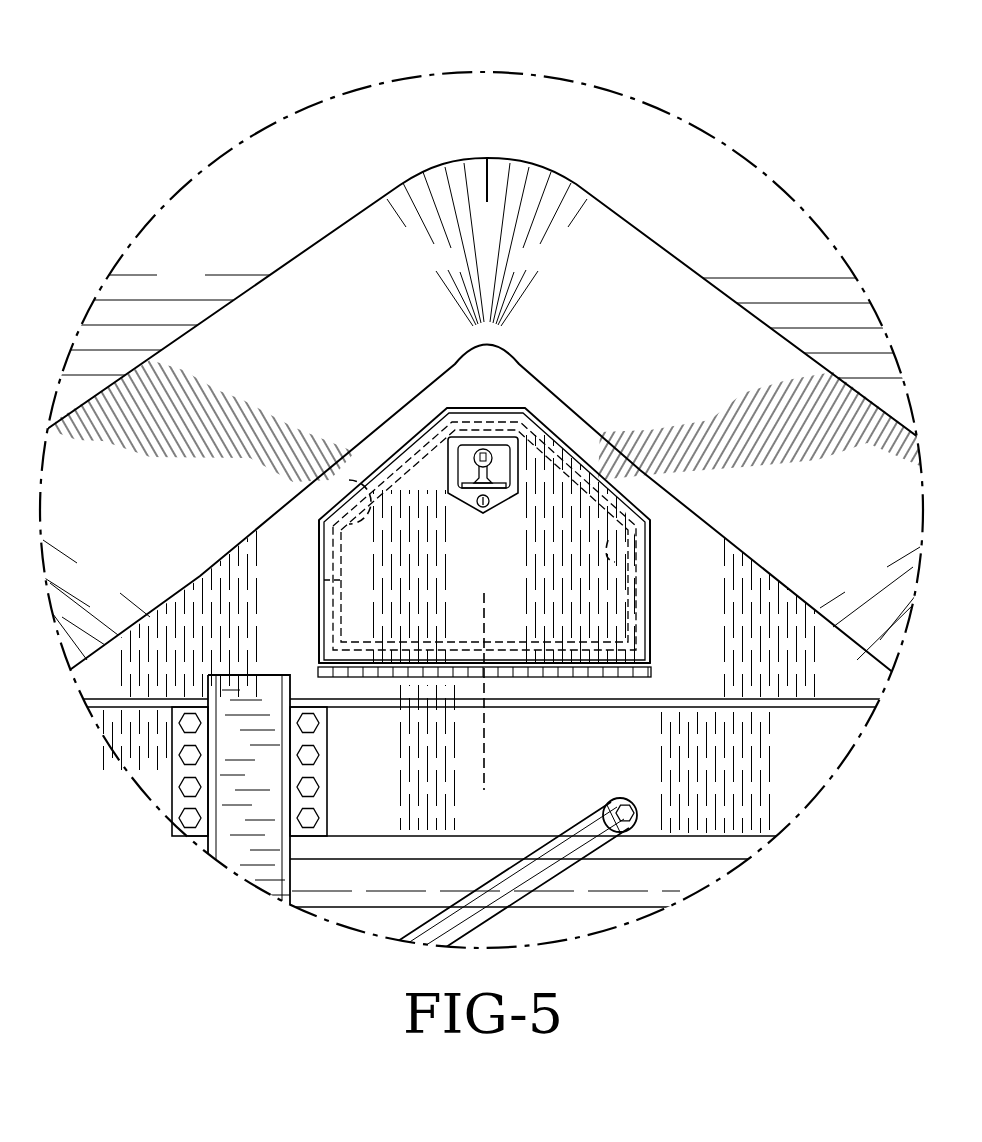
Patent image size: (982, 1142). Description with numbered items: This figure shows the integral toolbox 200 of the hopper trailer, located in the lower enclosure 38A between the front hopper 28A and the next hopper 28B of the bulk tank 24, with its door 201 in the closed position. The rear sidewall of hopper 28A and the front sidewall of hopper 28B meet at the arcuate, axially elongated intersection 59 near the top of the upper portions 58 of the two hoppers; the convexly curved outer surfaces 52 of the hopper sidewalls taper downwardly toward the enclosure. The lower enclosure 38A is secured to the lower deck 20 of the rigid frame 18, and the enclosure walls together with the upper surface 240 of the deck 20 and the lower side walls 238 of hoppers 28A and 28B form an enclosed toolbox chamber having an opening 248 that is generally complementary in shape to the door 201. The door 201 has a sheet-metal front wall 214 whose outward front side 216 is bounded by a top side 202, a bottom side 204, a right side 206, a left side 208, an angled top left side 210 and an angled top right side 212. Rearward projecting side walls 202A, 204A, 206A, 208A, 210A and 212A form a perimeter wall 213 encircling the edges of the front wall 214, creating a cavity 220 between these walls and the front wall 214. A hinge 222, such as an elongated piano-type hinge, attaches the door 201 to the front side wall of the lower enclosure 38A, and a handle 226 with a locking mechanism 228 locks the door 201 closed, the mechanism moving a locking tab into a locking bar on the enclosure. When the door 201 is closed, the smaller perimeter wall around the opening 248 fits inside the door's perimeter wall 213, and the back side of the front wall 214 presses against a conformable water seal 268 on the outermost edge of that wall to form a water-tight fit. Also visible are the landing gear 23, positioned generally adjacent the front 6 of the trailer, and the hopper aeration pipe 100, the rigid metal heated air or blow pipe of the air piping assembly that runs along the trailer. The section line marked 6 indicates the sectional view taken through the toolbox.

The bulk tank 24 is at (333, 114).
The upper portion of hopper 58 is at (243, 213).
The intersection 59 is at (485, 190).
The front hopper 28A is at (222, 256).
The hopper 28B is at (810, 259).
The outer surface of hopper sidewall 52 is at (104, 493).
The integral toolbox 200 is at (467, 545).
The door 201 is at (423, 430).
The top side 202 is at (482, 507).
The top projecting side wall 202A is at (467, 405).
The bottom side 204 is at (482, 722).
The bottom projecting side wall 204A is at (554, 670).
The right side 206 is at (754, 587).
The right projecting side wall 206A is at (655, 547).
The left side 208 is at (197, 591).
The left projecting side wall 208A is at (317, 547).
The angled top left side 210 is at (205, 421).
The angled top left projecting side wall 210A is at (205, 421).
The angled top right side 212 is at (751, 426).
The angled top right projecting side wall 212A is at (583, 452).
The perimeter wall 213 is at (654, 645).
The front wall 214 is at (532, 542).
The front side 216 is at (571, 621).
The cavity 220 is at (335, 486).
The hinge 222 is at (390, 678).
The handle 226 is at (467, 488).
The locking mechanism 228 is at (536, 442).
The lower side walls of hoppers 238 is at (187, 588).
The upper surface of lower deck 240 is at (640, 708).
The opening 248 is at (608, 540).
The water seal 268 is at (336, 583).
The lower enclosure 38A is at (698, 592).
The landing gear 23 is at (249, 863).
The hopper aeration pipe 100 is at (693, 880).
The frame 18 is at (720, 836).
The lower deck 20 is at (782, 785).
The front 6 is at (456, 790).